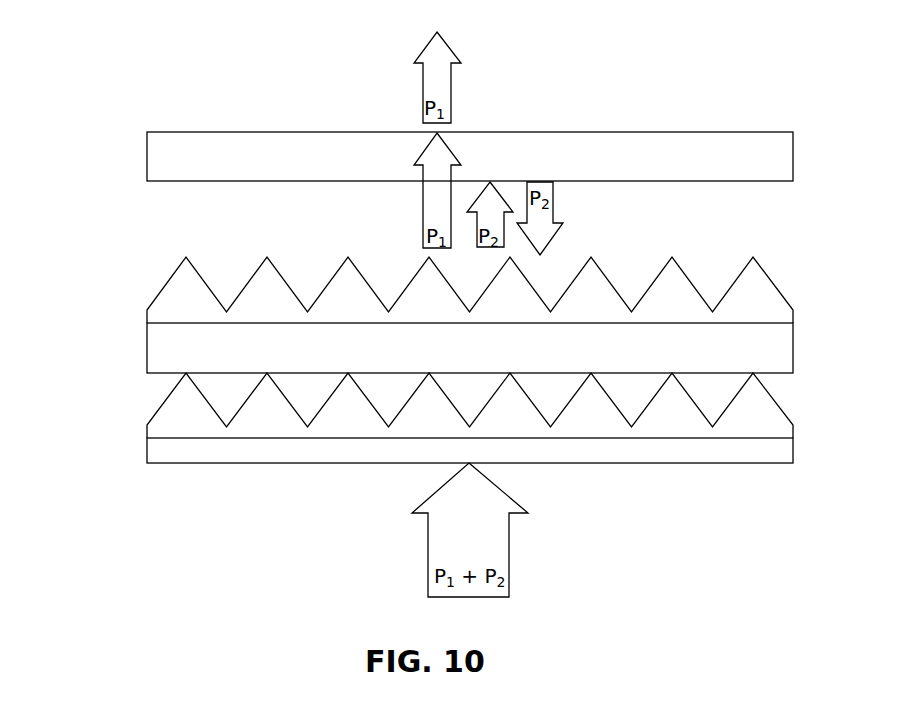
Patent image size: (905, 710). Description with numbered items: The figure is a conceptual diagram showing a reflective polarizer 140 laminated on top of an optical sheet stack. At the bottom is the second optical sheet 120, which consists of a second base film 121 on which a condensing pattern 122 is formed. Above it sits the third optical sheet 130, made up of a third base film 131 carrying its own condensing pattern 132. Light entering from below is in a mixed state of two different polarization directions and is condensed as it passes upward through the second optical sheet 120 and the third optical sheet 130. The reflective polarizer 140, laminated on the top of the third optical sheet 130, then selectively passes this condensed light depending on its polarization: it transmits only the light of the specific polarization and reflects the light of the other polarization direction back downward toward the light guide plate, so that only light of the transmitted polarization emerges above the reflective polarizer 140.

The reflective polarizer 140 is at (153, 158).
The third optical sheet 130 is at (423, 293).
The third base film 131 is at (167, 288).
The condensing pattern 132 is at (153, 348).
The second optical sheet 120 is at (423, 468).
The condensing pattern 122 is at (167, 405).
The second base film 121 is at (153, 452).